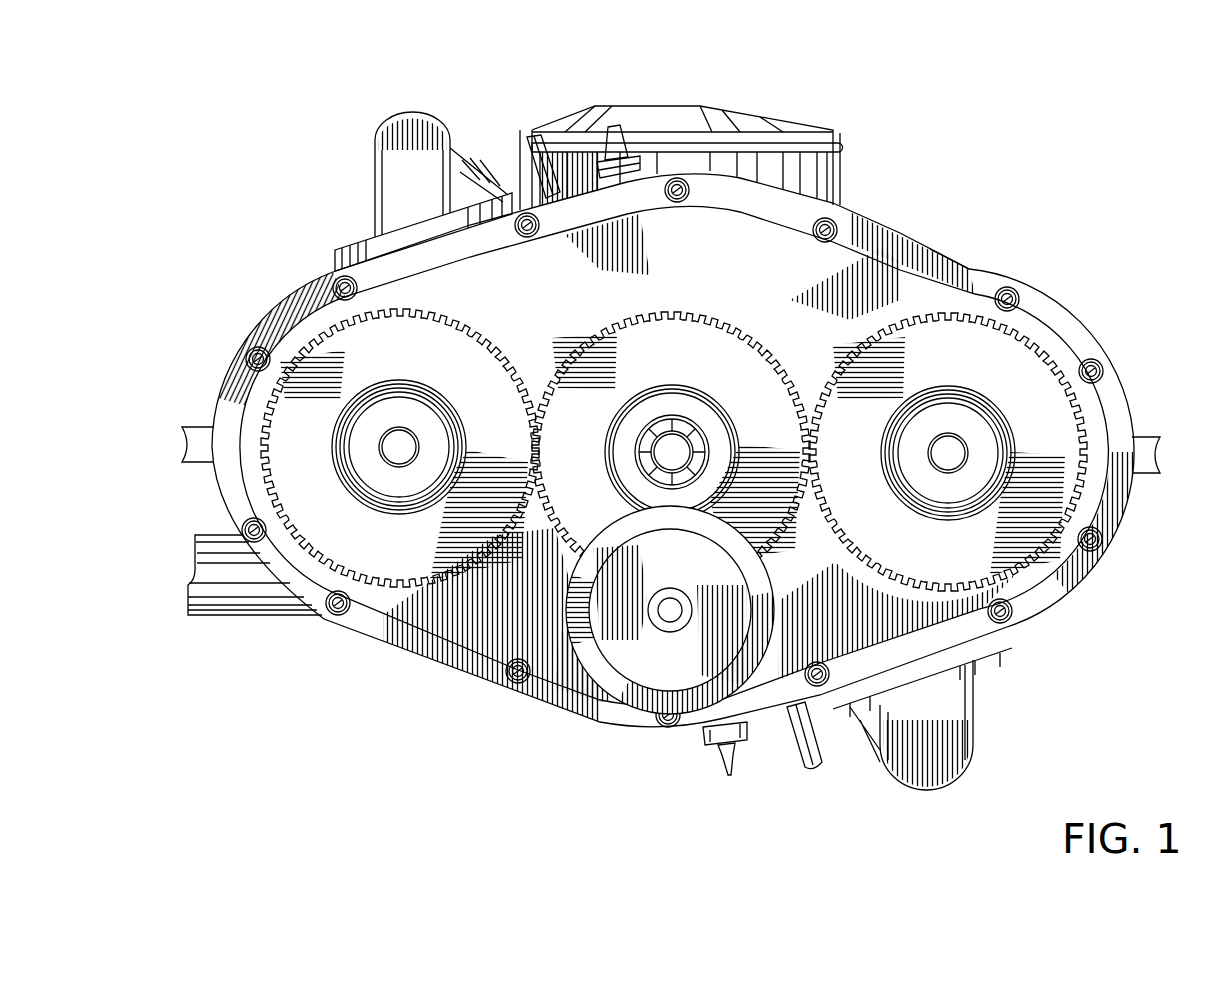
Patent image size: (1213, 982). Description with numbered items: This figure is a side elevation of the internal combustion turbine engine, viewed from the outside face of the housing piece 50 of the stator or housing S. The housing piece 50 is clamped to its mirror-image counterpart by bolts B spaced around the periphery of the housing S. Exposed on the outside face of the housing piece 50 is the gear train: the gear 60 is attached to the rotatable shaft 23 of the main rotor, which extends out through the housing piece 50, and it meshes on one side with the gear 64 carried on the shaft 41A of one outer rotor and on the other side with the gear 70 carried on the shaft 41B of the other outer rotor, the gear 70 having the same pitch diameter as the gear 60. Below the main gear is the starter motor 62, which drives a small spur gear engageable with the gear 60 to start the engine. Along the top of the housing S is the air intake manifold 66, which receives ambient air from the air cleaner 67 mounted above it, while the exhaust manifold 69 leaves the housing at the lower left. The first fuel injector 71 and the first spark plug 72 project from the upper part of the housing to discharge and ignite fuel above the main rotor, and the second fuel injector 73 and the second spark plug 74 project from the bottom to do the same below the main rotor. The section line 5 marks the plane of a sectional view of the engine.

The section line 5- 5 is at (437, 51).
The rotatable shaft 23 is at (653, 462).
The rotatable shaft 41A is at (392, 452).
The shaft 41B is at (930, 458).
The housing piece 50 is at (689, 242).
The gear 60 is at (686, 364).
The starter motor 62 is at (685, 569).
The gear 64 is at (412, 362).
The air intake manifold 66 is at (372, 184).
The air cleaner 67 is at (752, 110).
The exhaust manifold 69 is at (273, 632).
The gear 70 is at (962, 361).
The first fuel injector 71 is at (522, 148).
The first spark plug 72 is at (615, 128).
The second fuel injector 73 is at (824, 762).
The grease fitting 74 is at (703, 738).
The bolt B is at (519, 235).
The stator or housing S is at (992, 272).